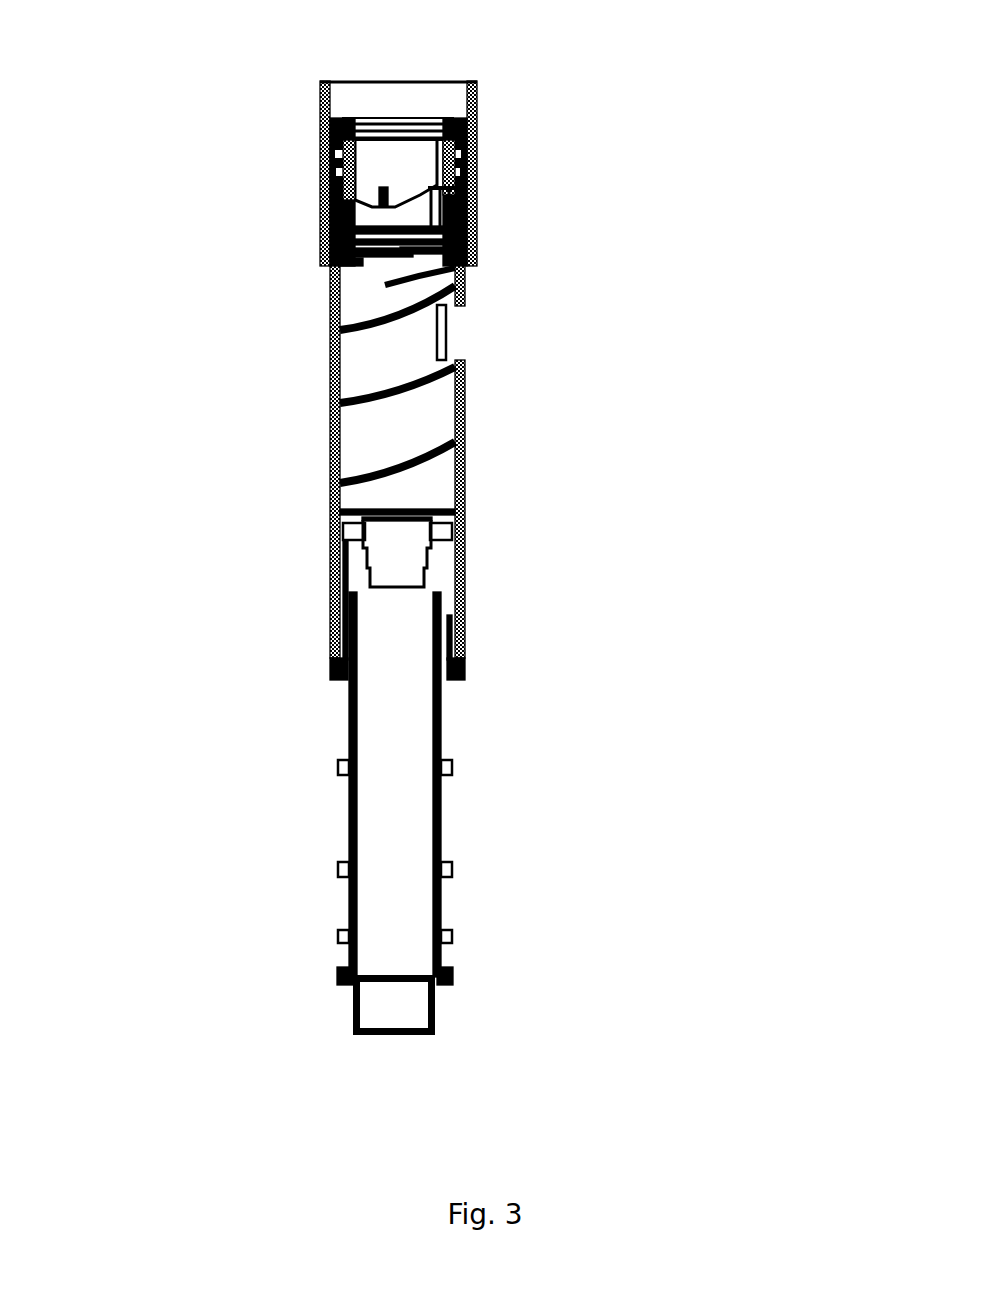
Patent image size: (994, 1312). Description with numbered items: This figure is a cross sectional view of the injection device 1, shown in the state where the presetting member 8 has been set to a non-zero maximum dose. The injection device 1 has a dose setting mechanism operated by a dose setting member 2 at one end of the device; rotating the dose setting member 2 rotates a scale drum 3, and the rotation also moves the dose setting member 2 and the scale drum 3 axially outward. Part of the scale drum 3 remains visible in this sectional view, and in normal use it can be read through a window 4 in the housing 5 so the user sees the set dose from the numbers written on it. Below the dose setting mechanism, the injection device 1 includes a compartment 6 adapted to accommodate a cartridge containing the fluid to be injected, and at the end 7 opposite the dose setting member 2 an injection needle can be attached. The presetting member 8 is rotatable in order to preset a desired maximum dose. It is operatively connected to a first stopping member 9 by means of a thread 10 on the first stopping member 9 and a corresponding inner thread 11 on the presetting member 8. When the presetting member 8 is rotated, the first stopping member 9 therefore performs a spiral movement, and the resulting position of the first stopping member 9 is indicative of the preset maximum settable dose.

The injection device 1 is at (573, 602).
The dose setting member 2 is at (475, 112).
The scale drum 3 is at (388, 165).
The window 4 is at (467, 341).
The housing 5 is at (465, 493).
The compartment 6 is at (383, 820).
The end 7 is at (410, 1037).
The presetting member 8 is at (440, 215).
The first stopping member 9 is at (345, 252).
The thread 10 is at (393, 240).
The inner thread 11 is at (336, 190).